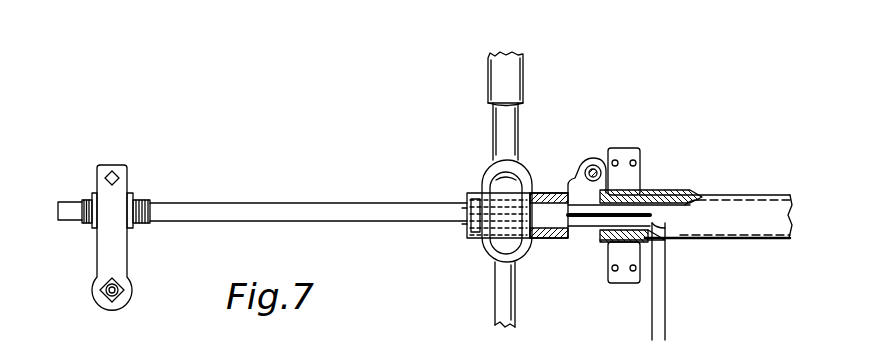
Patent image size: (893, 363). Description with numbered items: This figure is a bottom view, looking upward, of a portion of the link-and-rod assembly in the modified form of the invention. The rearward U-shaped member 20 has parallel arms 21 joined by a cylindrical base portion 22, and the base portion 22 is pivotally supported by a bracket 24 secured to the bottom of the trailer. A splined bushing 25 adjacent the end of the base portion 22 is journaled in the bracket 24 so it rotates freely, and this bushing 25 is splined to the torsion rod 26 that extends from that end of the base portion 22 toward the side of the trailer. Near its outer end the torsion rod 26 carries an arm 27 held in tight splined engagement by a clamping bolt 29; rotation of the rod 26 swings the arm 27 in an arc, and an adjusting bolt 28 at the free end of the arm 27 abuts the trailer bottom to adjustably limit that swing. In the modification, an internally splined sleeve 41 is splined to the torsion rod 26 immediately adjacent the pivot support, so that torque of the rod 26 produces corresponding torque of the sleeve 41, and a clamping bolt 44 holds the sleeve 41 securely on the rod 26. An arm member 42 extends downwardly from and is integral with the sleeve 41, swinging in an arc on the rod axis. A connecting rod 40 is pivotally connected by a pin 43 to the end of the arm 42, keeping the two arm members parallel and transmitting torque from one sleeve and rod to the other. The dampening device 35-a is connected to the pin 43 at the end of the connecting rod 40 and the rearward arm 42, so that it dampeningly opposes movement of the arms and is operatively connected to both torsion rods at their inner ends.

The rearward U-shaped member 20 is at (703, 180).
The arm 21 is at (658, 288).
The cylindrical base portion 22 is at (738, 197).
The bracket 24 is at (640, 148).
The splined bushing 25 is at (610, 244).
The torsion rod 26 is at (385, 203).
The arm 27 is at (129, 253).
The adjusting bolt 28 is at (105, 300).
The clamping bolt 29 is at (117, 172).
The dampening device 35-a is at (528, 76).
The connecting rod 40 is at (500, 302).
The internally splined sleeve 41 is at (550, 240).
The arm member 42 is at (505, 235).
The pin 43 is at (458, 226).
The clamping bolt 44 is at (590, 165).